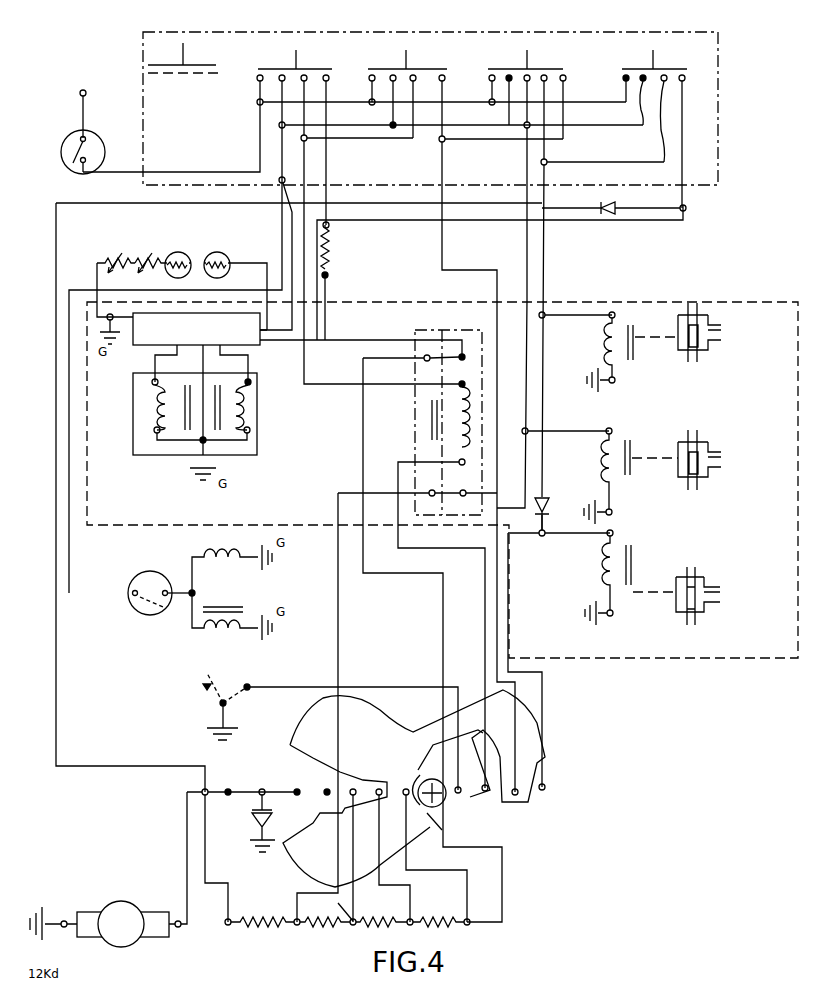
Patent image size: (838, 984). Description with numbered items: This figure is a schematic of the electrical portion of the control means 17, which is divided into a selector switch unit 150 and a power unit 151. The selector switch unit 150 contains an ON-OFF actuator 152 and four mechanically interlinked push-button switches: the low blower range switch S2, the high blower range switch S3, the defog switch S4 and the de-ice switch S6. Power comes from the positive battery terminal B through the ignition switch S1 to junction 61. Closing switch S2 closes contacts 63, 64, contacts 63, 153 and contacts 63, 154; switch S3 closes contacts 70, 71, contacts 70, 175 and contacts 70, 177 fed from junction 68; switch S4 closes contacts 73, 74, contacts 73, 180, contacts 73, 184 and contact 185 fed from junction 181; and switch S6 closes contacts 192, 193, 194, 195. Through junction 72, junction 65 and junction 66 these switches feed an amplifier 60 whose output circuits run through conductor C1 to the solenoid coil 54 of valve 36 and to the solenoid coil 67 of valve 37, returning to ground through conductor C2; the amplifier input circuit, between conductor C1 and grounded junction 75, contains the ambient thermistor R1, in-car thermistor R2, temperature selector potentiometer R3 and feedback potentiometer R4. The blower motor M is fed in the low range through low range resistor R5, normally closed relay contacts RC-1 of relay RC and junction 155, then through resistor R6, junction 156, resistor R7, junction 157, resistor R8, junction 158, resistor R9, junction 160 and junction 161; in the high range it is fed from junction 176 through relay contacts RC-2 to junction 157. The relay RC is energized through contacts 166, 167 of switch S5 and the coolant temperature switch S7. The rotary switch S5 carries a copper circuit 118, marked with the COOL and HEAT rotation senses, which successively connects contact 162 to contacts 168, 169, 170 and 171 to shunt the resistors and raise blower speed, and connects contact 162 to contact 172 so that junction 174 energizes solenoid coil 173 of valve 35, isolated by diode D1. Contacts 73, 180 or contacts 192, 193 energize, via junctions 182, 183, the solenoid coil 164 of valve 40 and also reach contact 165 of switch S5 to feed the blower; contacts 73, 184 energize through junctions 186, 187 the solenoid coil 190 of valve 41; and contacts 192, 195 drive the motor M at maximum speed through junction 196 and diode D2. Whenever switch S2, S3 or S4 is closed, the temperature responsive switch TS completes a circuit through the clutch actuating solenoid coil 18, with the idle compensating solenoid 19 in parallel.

The selector switch unit 150 is at (718, 77).
The control means 17 is at (759, 202).
The ON-OFF actuator 152 is at (195, 34).
The low blower speed range switch S2 is at (290, 37).
The high blower speed range switch S3 is at (410, 35).
The defog switch S4 is at (540, 35).
The de-ice switch S6 is at (660, 35).
The contact of switch S2 63 is at (257, 80).
The junction 61 is at (257, 103).
The contact of switch S2 64 is at (281, 83).
The junction 65 is at (279, 126).
The junction 66 is at (279, 180).
The contact of switch S2 154 is at (374, 229).
The contact of switch S2 153 is at (329, 80).
The contact of switch S3 70 is at (371, 82).
The junction 68 is at (369, 101).
The contact of switch S3 71 is at (392, 82).
The junction 72 is at (390, 123).
The contact of switch S3 177 is at (403, 98).
The contact of switch S3 175 is at (423, 106).
The junction 176 is at (446, 142).
The contact of switch S4 73 is at (489, 80).
The junction 181 is at (489, 104).
The contact of switch S4 74 is at (504, 100).
The contact of switch S4 180 is at (515, 291).
The junction 182 is at (524, 127).
The contact of switch S4 184 is at (541, 302).
The junction 186 is at (602, 156).
The contact of switch S4 185 is at (566, 79).
The contact of switch S6 192 is at (624, 83).
The contact of switch S6 193 is at (640, 112).
The contact of switch S6 194 is at (659, 130).
The contact of switch S6 195 is at (686, 81).
The junction 196 is at (686, 208).
The diode D2 is at (608, 205).
The battery terminal B is at (73, 103).
The ignition switch S1 is at (61, 151).
The feedback potentiometer R4 is at (122, 256).
The temperature selector potentiometer R3 is at (147, 256).
The thermistor R2 is at (182, 250).
The thermistor R1 is at (221, 250).
The low range resistor R5 is at (333, 245).
The junction 75 is at (104, 306).
The amplifier 60 is at (154, 344).
The conductor C1 is at (280, 322).
The valve 37 is at (133, 433).
The solenoid coil 67 is at (160, 402).
The valve 36 is at (252, 384).
The solenoid coil 54 is at (245, 420).
The conductor C2 is at (205, 455).
The power unit 151 is at (79, 481).
The relay coil RC is at (412, 437).
The relay contacts RC-1 is at (424, 346).
The relay contacts RC-2 is at (432, 500).
The junction 187 is at (543, 318).
The solenoid coil 190 is at (604, 350).
The valve 41 is at (715, 348).
The junction 183 is at (520, 433).
The solenoid coil 164 is at (601, 468).
The valve 40 is at (715, 473).
The diode D1 is at (560, 492).
The junction 174 is at (540, 536).
The solenoid coil 173 is at (600, 576).
The valve 35 is at (714, 576).
The temperature responsive switch TS is at (168, 572).
The clutch actuating solenoid coil 18 is at (220, 563).
The idle compensating solenoid 19 is at (220, 633).
The coolant temperature switch S7 is at (198, 679).
The copper circuit 118 is at (388, 722).
The cool direction COOL is at (286, 739).
The heat direction HEAT is at (289, 846).
The junction 161 is at (210, 780).
The stationary switch contact 171 is at (297, 786).
The stationary switch contact 170 is at (325, 796).
The contact of switch S5 169 is at (355, 796).
The contact of switch S5 168 is at (381, 796).
The contact of switch S5 162 is at (414, 782).
The contact of switch S5 166 is at (484, 775).
The contact of switch S5 167 is at (460, 800).
The contact of switch S5 165 is at (514, 802).
The contact of switch S5 172 is at (545, 787).
The switch S5 is at (568, 813).
The blower motor M is at (104, 920).
The junction 160 is at (226, 926).
The resistor R9 is at (280, 912).
The junction 158 is at (294, 926).
The resistor R8 is at (331, 912).
The junction 157 is at (351, 926).
The resistor R7 is at (387, 912).
The junction 156 is at (408, 926).
The resistor R6 is at (447, 912).
The junction 155 is at (468, 918).